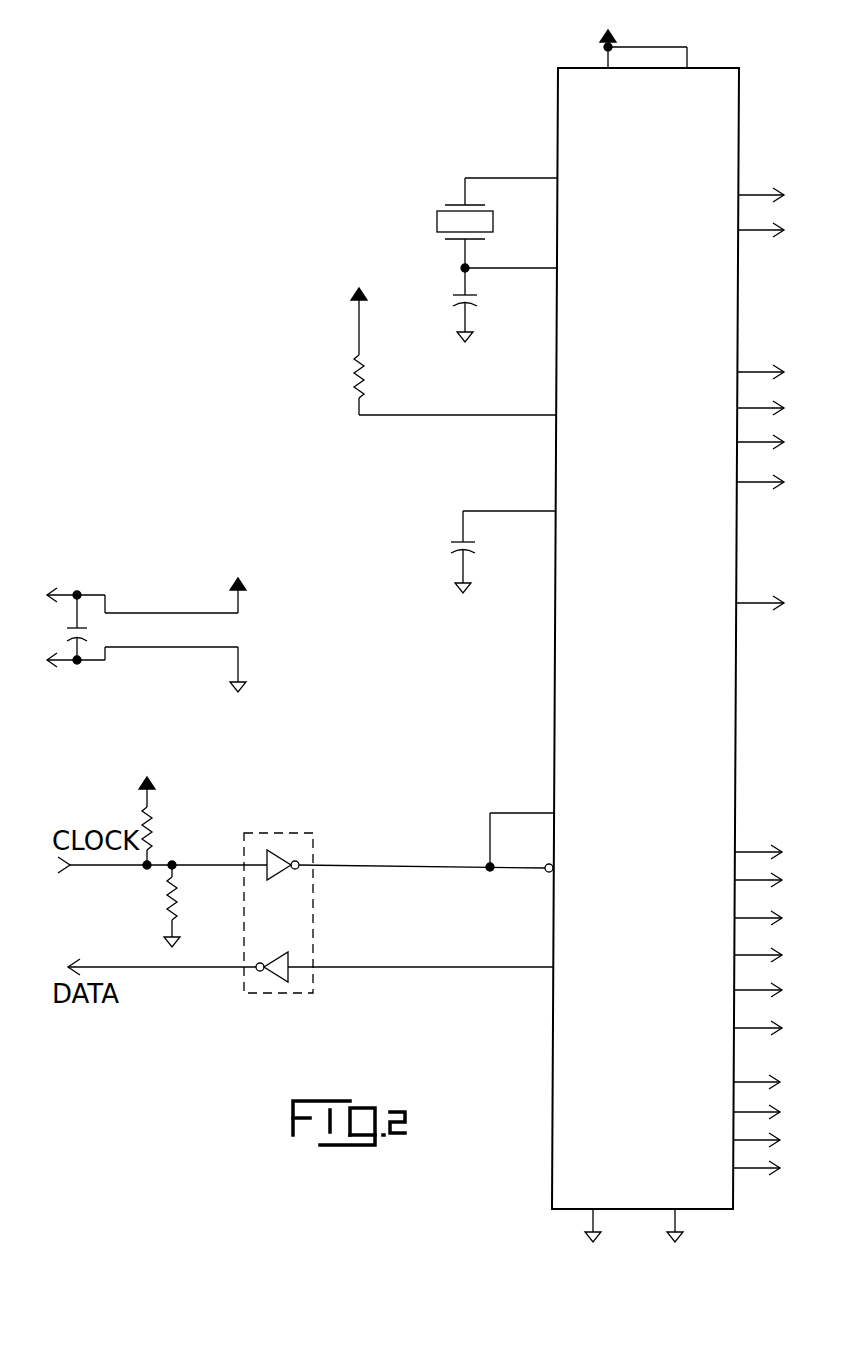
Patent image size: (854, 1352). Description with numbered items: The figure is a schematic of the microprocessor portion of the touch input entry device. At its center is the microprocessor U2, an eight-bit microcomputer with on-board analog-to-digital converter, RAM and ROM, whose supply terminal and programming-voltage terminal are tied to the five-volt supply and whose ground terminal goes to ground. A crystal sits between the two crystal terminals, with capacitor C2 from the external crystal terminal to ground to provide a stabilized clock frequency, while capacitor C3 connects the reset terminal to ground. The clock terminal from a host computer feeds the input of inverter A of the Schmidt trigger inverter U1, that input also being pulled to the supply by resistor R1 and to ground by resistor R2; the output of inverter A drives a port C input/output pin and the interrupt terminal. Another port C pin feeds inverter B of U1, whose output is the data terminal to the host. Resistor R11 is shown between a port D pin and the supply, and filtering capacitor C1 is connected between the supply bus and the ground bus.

The microprocessor U2 is at (664, 627).
The Schmidt trigger inverter U1 is at (278, 898).
The resistor R1 is at (157, 807).
The resistor R2 is at (203, 912).
The pull-up resistor R11 is at (449, 335).
The filtering capacitor C1 is at (157, 638).
The capacitor C2 is at (483, 305).
The capacitor C3 is at (503, 552).